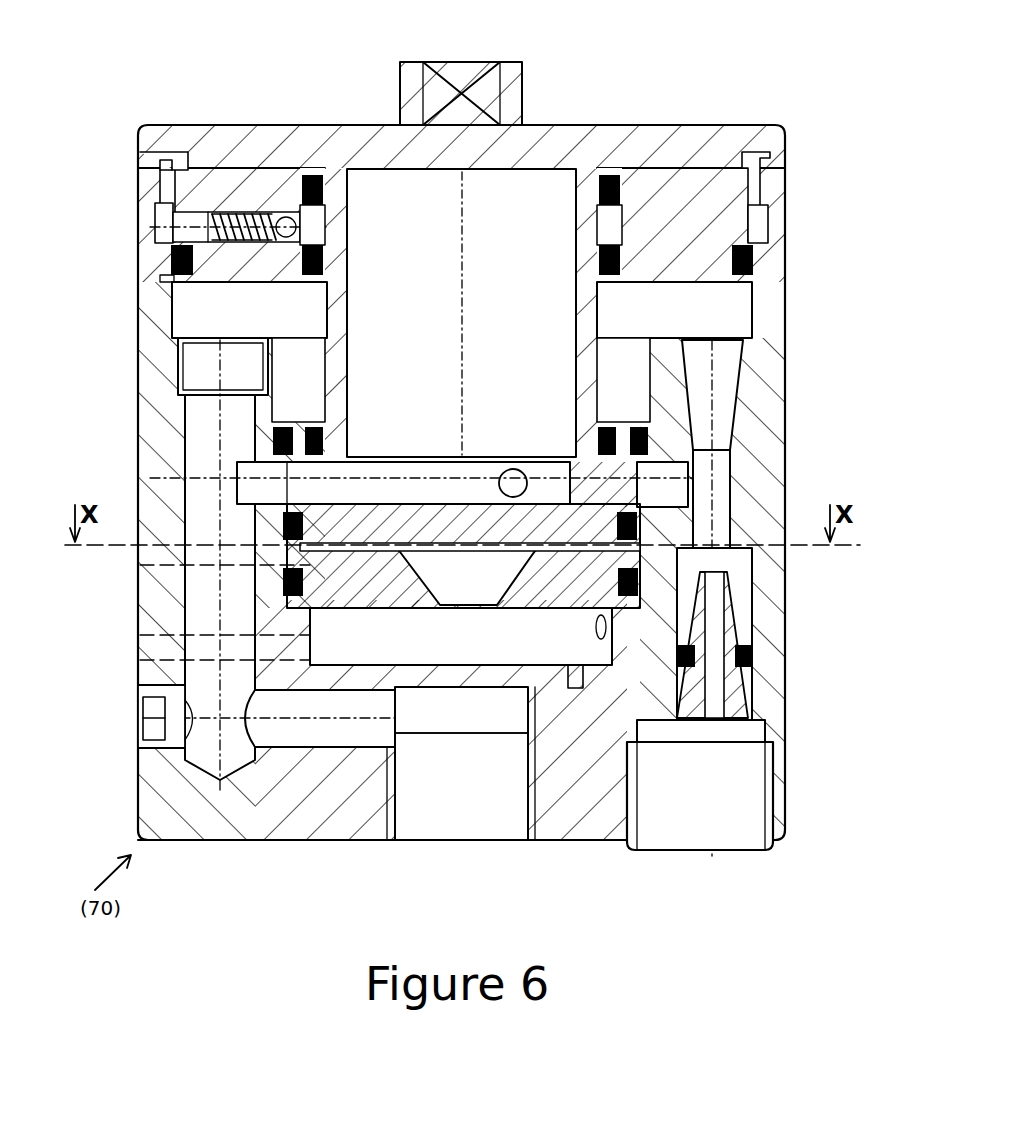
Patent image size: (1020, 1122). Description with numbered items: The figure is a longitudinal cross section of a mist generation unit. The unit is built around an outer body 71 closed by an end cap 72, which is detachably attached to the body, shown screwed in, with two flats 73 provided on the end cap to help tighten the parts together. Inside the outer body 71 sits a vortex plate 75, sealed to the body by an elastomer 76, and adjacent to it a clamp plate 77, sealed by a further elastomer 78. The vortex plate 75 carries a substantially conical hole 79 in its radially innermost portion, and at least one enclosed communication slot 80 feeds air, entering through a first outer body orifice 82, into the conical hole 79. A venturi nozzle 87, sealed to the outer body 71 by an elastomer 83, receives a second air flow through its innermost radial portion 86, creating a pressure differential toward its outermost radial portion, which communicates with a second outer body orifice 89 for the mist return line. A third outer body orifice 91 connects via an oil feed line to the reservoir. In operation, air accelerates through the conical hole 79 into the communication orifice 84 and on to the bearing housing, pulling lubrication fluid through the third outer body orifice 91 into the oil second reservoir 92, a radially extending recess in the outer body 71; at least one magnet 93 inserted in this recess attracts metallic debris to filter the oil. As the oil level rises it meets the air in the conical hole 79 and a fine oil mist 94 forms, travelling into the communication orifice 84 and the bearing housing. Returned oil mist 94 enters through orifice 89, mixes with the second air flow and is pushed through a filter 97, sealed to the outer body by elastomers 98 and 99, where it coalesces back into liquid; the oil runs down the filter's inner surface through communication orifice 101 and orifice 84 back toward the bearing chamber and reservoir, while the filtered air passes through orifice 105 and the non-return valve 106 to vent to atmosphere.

The outer body 71 is at (150, 824).
The end cap 72 is at (258, 146).
The flats 73 is at (466, 78).
The vortex plate 75 is at (278, 548).
The elastomer 76 is at (295, 580).
The clamp plate 77 is at (558, 524).
The elastomer 78 is at (266, 434).
The conical hole 79 is at (483, 577).
The enclosed communication slot 80 is at (640, 528).
The first outer body orifice 82 is at (140, 553).
The elastomer 83 is at (682, 668).
The communication orifice 84 is at (423, 816).
The innermost radial portion 86 is at (720, 690).
The venturi nozzle 87 is at (755, 637).
The second outer body orifice 89 is at (758, 573).
The third outer body orifice 91 is at (140, 650).
The oil second reservoir 92 is at (355, 650).
The magnet 93 is at (573, 690).
The oil mist 94 is at (473, 818).
The filter 97 is at (600, 318).
The elastomer 98 is at (654, 438).
The elastomer 99 is at (754, 262).
The communication orifice 101 is at (205, 492).
The orifice 105 is at (176, 165).
The non-return valve 106 is at (198, 236).